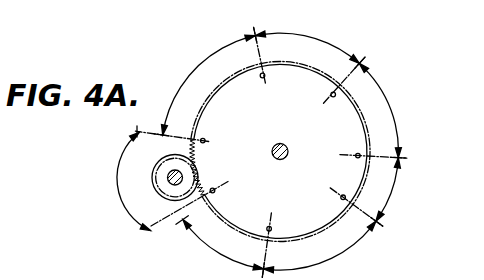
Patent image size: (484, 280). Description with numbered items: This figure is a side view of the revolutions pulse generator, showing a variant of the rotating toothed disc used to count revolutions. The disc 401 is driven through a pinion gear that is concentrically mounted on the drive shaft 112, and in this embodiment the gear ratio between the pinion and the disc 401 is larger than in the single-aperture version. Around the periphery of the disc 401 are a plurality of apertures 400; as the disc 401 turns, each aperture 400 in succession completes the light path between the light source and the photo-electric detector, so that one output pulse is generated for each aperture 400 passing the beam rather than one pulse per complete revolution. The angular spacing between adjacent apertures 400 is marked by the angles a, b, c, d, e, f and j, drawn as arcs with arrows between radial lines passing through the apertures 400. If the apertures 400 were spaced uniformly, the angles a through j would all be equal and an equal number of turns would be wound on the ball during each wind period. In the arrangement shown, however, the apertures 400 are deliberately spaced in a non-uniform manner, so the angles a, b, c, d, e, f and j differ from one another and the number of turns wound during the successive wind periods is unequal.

The disc 401 is at (270, 152).
The apertures 400 is at (331, 94).
The drive shaft 112 is at (152, 168).
The angle a is at (205, 62).
The angle b is at (309, 34).
The angle c is at (382, 96).
The angle d is at (389, 196).
The angle e is at (339, 256).
The angle f is at (216, 255).
The angle j is at (137, 190).